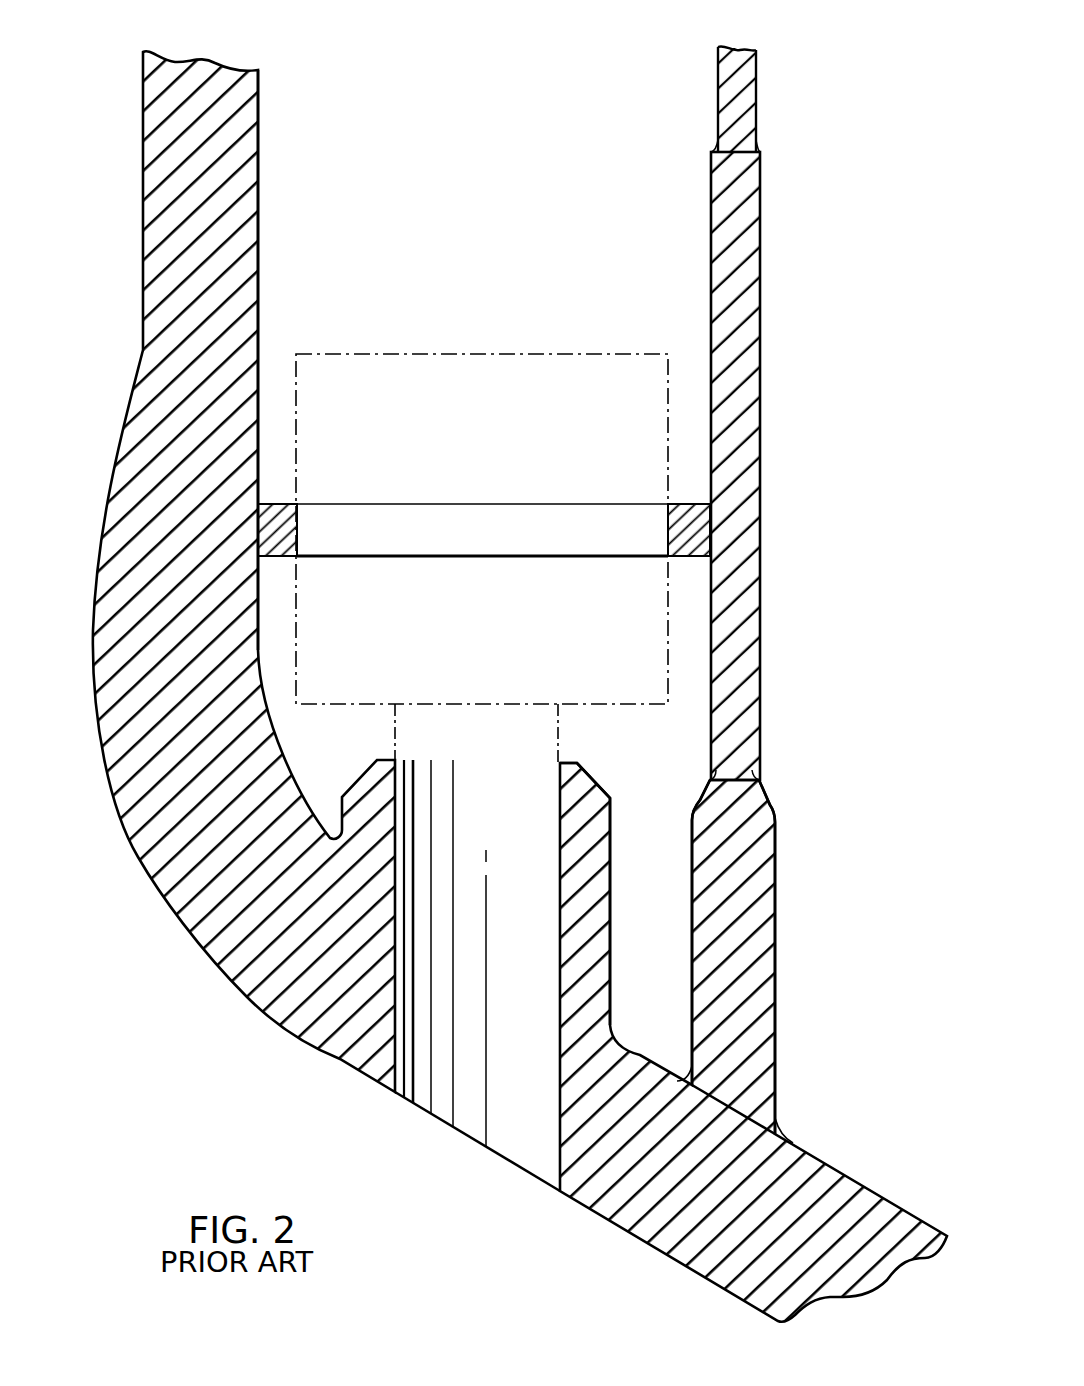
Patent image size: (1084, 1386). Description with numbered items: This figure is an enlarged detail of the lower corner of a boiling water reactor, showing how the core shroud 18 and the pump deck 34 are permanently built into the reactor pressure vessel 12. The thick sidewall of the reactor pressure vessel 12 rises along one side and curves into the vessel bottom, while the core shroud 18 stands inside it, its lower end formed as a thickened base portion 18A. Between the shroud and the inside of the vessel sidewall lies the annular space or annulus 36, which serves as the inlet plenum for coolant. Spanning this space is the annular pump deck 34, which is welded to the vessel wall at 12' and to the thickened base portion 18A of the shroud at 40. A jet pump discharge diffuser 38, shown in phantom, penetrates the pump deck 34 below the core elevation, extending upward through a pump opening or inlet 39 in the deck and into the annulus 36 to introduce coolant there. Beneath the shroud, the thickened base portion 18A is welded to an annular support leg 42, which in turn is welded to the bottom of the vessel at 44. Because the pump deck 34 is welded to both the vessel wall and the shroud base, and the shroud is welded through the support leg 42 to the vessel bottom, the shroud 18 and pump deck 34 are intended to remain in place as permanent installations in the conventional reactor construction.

The reactor pressure vessel 12 is at (515, 686).
The vessel wall weld location 12' is at (287, 360).
The core shroud 18 is at (735, 102).
The thickened base portion of the shroud 18A is at (725, 245).
The annular pump deck 34 is at (280, 505).
The annulus 36 is at (349, 141).
The jet pump diffuser 38 is at (468, 393).
The pump opening 39 is at (600, 790).
The pump deck to shroud weld 40 is at (760, 152).
The annular support leg 42 is at (757, 867).
The support leg to vessel weld 44 is at (687, 1073).